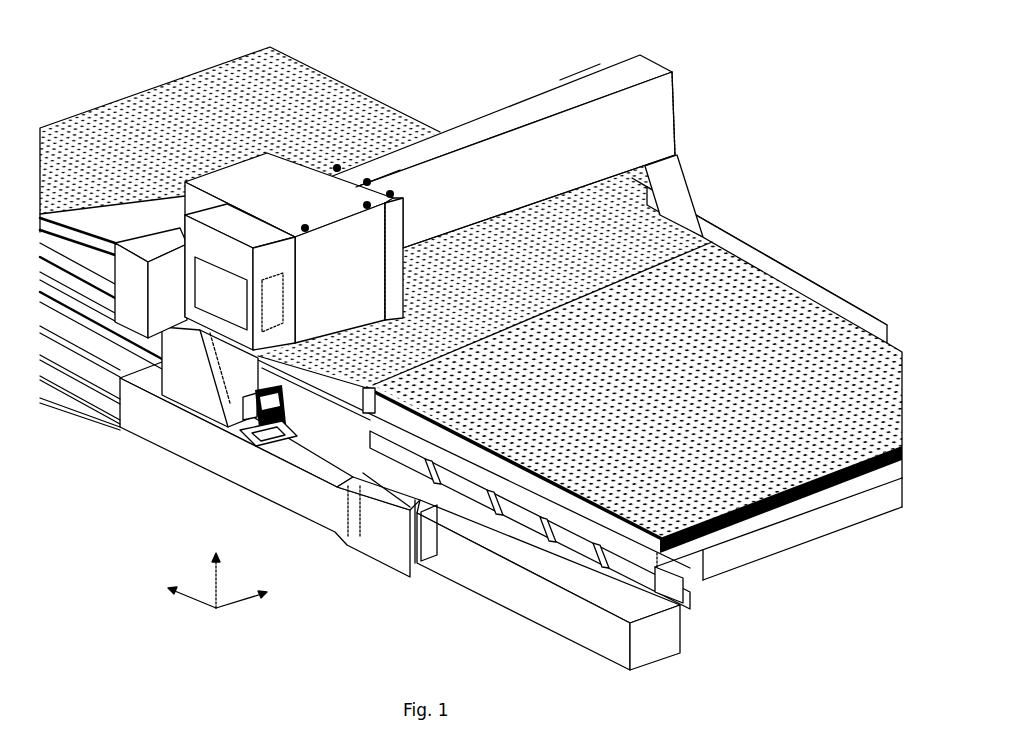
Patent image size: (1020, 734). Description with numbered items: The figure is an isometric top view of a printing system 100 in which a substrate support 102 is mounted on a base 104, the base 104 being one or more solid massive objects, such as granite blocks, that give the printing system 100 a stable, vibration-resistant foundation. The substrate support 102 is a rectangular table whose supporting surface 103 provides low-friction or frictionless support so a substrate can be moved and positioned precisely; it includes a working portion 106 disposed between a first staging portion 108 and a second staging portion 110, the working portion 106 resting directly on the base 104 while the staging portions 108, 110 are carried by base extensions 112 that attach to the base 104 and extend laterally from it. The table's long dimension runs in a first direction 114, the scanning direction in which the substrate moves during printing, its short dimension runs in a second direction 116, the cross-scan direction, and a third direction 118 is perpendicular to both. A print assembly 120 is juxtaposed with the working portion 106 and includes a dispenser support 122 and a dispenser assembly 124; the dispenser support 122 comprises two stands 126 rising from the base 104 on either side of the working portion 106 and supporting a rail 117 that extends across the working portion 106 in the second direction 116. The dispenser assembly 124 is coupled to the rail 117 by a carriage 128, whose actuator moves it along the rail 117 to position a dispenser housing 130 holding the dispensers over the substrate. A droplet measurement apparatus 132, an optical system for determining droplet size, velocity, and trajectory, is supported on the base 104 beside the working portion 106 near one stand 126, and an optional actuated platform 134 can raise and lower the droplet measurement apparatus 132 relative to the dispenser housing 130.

The printing system 100 is at (474, 347).
The substrate support 102 is at (638, 411).
The supporting surface 103 is at (833, 346).
The base 104 is at (223, 482).
The working portion 106 is at (346, 393).
The first staging portion 108 is at (730, 277).
The second staging portion 110 is at (358, 96).
The base extensions 112 is at (680, 636).
The first direction 114 is at (195, 598).
The second direction 116 is at (243, 598).
The rail 117 is at (588, 88).
The third direction 118 is at (221, 572).
The print assembly 120 is at (481, 241).
The dispenser support 122 is at (550, 85).
The dispenser assembly 124 is at (400, 179).
The stands 126 is at (702, 212).
The carriage 128 is at (237, 185).
The dispenser housing 130 is at (410, 226).
The droplet measurement apparatus 132 is at (291, 416).
The actuated platform 134 is at (260, 440).